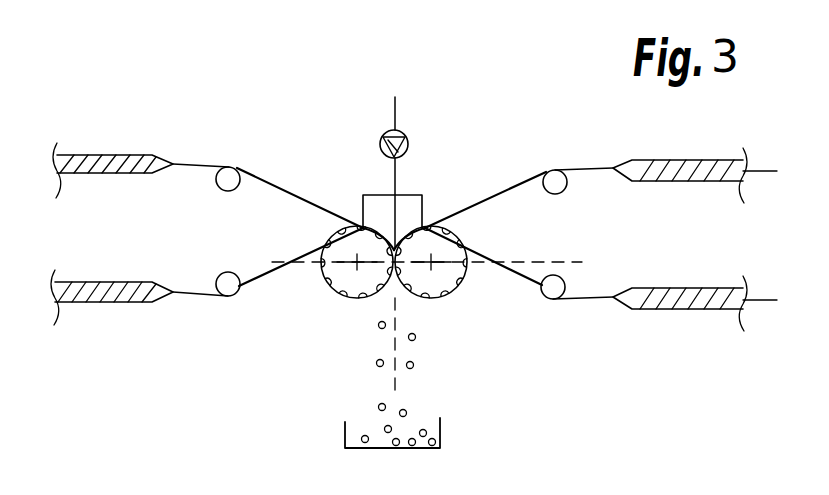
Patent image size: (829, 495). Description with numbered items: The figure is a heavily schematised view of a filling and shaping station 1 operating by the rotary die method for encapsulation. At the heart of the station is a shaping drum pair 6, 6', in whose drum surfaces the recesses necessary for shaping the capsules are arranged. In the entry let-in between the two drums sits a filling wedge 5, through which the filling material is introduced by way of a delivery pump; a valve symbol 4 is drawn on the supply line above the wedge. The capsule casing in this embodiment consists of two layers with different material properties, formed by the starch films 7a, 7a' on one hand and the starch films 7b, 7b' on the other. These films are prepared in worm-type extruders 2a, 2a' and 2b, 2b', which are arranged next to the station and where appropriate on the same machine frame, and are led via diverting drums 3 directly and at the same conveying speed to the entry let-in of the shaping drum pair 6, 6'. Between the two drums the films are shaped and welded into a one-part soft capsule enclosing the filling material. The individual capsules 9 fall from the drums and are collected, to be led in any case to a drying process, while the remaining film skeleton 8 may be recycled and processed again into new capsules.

The filling and shaping station 1 is at (496, 110).
The worm-type extruder 2a is at (141, 155).
The worm-type extruder 2b is at (139, 282).
The worm-type extruder 2a' is at (666, 162).
The worm-type extruder 2b' is at (665, 291).
The diverting drums 3 is at (226, 191).
The metering valve 4 is at (378, 133).
The filling wedge 5 is at (407, 211).
The shaping drum 6 is at (338, 285).
The shaping drum 6' is at (439, 285).
The starch film 7a is at (315, 203).
The starch film 7b is at (301, 252).
The starch film 7a' is at (470, 201).
The starch film 7b' is at (483, 256).
The film skeleton 8 is at (395, 392).
The capsules 9 is at (440, 430).